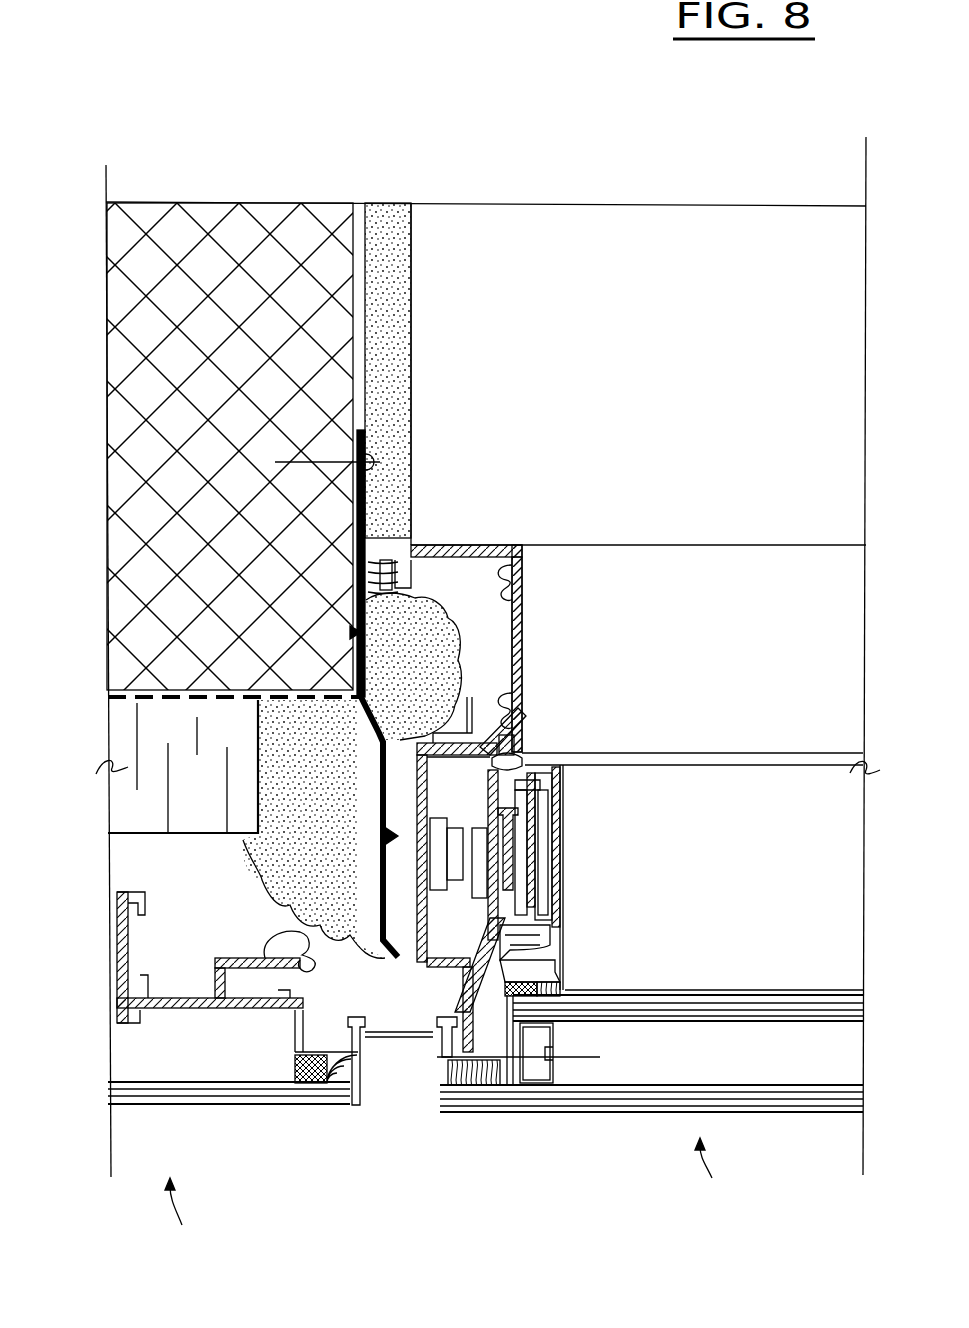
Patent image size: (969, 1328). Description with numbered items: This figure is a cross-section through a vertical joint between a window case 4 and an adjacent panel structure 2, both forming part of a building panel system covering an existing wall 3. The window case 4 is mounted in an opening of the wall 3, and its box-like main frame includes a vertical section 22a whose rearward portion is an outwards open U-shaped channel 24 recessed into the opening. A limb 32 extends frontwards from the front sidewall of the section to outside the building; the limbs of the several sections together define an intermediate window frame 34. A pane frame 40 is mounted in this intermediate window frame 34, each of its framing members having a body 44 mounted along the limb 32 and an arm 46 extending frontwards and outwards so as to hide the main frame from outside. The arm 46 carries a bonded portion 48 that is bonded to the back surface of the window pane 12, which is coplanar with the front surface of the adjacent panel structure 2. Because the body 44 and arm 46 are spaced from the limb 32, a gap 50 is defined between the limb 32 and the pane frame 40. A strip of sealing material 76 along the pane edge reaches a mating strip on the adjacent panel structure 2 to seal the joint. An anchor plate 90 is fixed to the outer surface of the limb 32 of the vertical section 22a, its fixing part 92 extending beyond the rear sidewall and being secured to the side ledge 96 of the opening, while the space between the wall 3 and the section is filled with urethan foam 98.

The panel structure 2 is at (181, 1220).
The wall 3 is at (108, 364).
The window case 4 is at (714, 1178).
The window pane 12 is at (720, 1075).
The vertical section 22a is at (512, 650).
The U-shaped channel 24 is at (493, 632).
The limb 32 is at (413, 866).
The intermediate window frame 34 is at (393, 833).
The pane frame 40 is at (538, 852).
The body 44 is at (550, 812).
The arm 46 is at (522, 938).
The bonded portion 48 is at (542, 973).
The gap 50 is at (476, 806).
The strip of sealing material 76 is at (427, 1036).
The anchor plate 90 is at (355, 632).
The fixing part 92 is at (357, 547).
The side ledge 96 is at (350, 396).
The urethan foam 98 is at (416, 617).